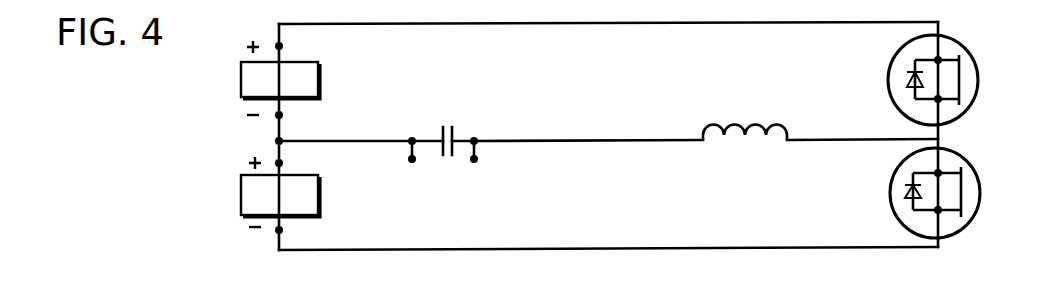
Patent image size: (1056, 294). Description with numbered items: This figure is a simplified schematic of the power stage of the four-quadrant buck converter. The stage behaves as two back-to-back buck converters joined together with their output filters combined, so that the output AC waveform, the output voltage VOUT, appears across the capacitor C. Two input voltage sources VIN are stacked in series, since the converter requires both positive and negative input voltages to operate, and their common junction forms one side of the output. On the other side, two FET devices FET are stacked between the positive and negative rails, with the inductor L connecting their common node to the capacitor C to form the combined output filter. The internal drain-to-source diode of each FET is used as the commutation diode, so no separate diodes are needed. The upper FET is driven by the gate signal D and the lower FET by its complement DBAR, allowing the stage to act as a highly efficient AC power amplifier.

The input voltage VIN is at (280, 137).
The capacitor C is at (443, 133).
The output voltage VOUT is at (449, 183).
The inductor L is at (745, 119).
The element FET is at (909, 136).
The gate drive signal D is at (972, 82).
The complementary gate drive signal DBAR is at (974, 190).